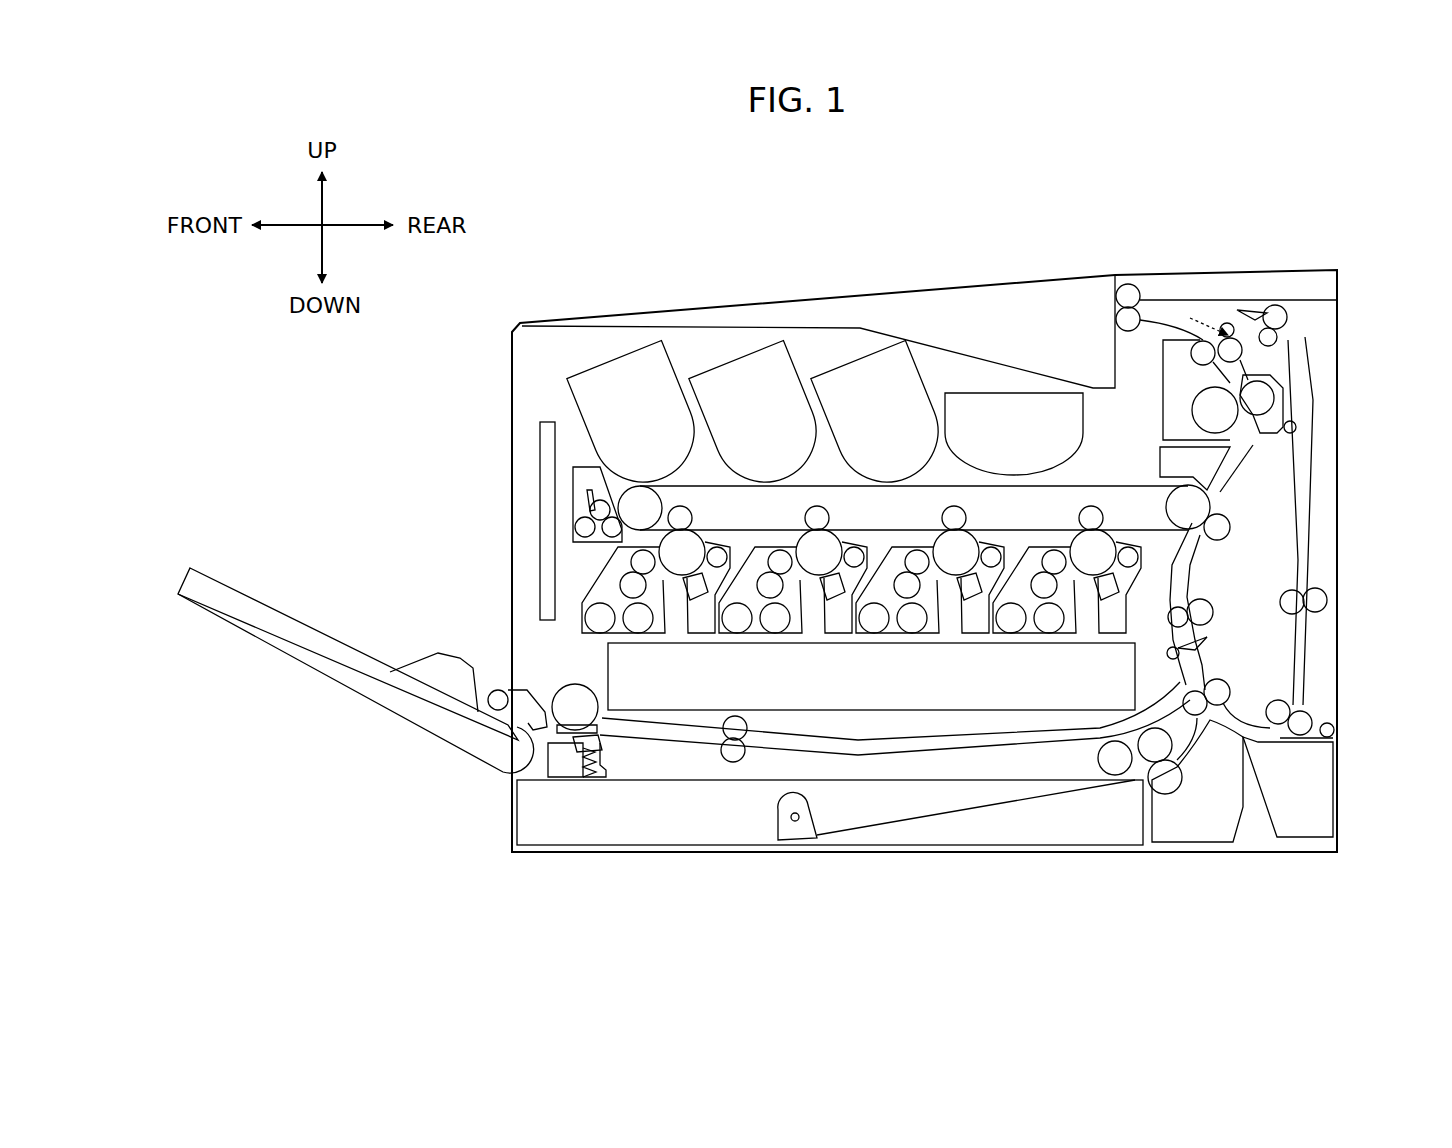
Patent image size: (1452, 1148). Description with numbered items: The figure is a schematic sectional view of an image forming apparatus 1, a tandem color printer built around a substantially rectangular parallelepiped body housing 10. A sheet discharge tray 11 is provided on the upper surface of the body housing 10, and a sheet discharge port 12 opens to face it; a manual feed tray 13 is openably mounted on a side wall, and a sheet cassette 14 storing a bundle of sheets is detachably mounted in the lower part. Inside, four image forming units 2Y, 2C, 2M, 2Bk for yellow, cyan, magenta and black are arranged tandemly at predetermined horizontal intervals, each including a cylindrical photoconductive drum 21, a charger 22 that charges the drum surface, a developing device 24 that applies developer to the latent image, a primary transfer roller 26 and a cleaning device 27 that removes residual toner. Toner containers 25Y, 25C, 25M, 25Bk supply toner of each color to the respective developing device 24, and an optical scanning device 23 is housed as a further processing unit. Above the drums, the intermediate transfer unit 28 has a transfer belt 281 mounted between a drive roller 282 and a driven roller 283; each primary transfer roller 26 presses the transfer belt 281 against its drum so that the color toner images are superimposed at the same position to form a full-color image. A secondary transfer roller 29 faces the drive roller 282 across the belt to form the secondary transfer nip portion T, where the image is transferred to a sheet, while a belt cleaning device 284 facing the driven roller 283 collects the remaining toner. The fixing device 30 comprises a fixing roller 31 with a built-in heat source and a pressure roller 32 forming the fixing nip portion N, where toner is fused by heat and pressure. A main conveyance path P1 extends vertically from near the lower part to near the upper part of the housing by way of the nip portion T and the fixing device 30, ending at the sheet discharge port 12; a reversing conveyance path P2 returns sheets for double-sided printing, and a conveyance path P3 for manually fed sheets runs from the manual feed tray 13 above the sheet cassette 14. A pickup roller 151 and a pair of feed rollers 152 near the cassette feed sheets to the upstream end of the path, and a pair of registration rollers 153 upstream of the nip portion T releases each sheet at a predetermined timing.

The image forming apparatus 1 is at (882, 500).
The body housing 10 is at (512, 362).
The sheet discharge tray 11 is at (938, 345).
The sheet discharge port 12 is at (1110, 296).
The manual feed tray 13 is at (242, 585).
The sheet cassette 14 is at (540, 810).
The photoconductive drum 21 is at (682, 572).
The charger 22 is at (703, 592).
The optical scanning device 23 is at (620, 665).
The developing device 24 is at (612, 608).
The toner container 25Y is at (618, 375).
The toner container 25C is at (742, 375).
The toner container 25M is at (858, 375).
The toner container 25Bk is at (1018, 410).
The primary transfer roller 26 is at (693, 510).
The cleaning device 27 is at (727, 570).
The intermediate transfer unit 28 is at (924, 544).
The transfer belt 281 is at (868, 535).
The drive roller 282 is at (1234, 508).
The driven roller 283 is at (635, 503).
The belt cleaning device 284 is at (575, 506).
The secondary transfer roller 29 is at (1222, 534).
The fixing device 30 is at (1233, 414).
The fixing roller 31 is at (1287, 401).
The pressure roller 32 is at (1268, 400).
The image forming unit 2Y is at (685, 608).
The image forming unit 2C is at (808, 592).
The image forming unit 2M is at (945, 592).
The image forming unit 2Bk is at (1083, 592).
The pickup roller 151 is at (1115, 770).
The pair of feed rollers 152 is at (1165, 792).
The pair of registration rollers 153 is at (1206, 616).
The fixing nip portion N is at (1286, 372).
The secondary transfer nip portion T is at (1231, 528).
The main conveyance path P1 is at (1291, 606).
The reversing conveyance path P2 is at (1305, 543).
The conveyance path for manually fed sheet P3 is at (775, 742).